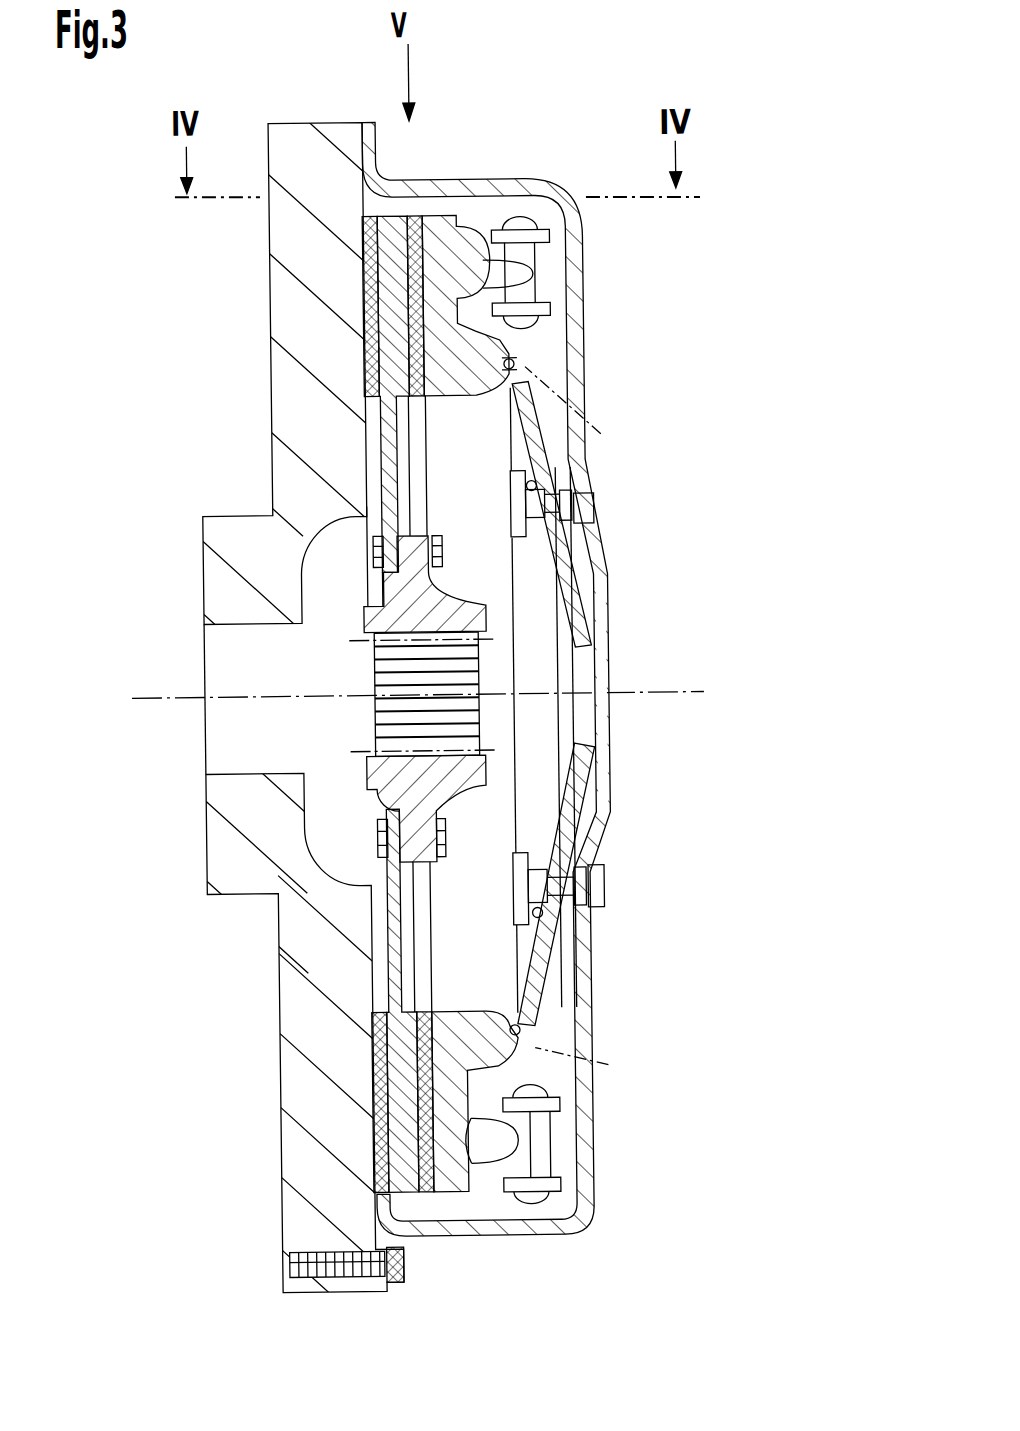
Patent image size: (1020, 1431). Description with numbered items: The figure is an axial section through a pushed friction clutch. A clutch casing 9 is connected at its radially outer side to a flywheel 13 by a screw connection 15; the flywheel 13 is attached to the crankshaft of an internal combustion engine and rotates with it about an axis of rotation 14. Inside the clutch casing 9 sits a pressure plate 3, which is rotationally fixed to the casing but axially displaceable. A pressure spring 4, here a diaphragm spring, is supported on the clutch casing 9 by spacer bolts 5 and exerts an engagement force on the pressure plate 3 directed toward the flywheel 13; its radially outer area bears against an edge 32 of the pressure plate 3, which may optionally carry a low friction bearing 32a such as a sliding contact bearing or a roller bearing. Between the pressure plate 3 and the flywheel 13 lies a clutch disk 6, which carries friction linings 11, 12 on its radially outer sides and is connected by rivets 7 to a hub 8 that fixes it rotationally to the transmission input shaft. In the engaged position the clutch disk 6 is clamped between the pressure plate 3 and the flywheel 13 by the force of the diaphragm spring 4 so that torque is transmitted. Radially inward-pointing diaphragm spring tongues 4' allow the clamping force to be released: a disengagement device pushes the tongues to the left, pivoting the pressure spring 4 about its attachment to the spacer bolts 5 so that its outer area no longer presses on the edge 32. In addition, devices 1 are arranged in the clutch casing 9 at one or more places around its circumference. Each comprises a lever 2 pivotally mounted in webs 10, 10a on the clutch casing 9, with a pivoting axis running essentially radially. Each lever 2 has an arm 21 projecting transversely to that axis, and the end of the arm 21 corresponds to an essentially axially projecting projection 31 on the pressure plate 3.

The device 1 is at (562, 1155).
The lever 2 is at (542, 1124).
The pressure plate 3 is at (521, 1027).
The pressure spring 4 is at (588, 884).
The diaphragm spring tongues 4' is at (587, 514).
The spacer bolt 5 is at (596, 508).
The clutch disk 6 is at (391, 895).
The rivet 7 is at (370, 840).
The hub 8 is at (483, 630).
The clutch casing 9 is at (584, 388).
The web 10 is at (553, 308).
The web 10a is at (553, 240).
The friction lining 11 is at (423, 236).
The friction lining 12 is at (399, 214).
The flywheel 13 is at (286, 339).
The axis of rotation 14 is at (145, 703).
The screw connection 15 is at (381, 1284).
The arm 21 is at (509, 1167).
The projection 31 is at (488, 1162).
The edge 32 is at (524, 362).
The low friction bearing 32a is at (582, 726).